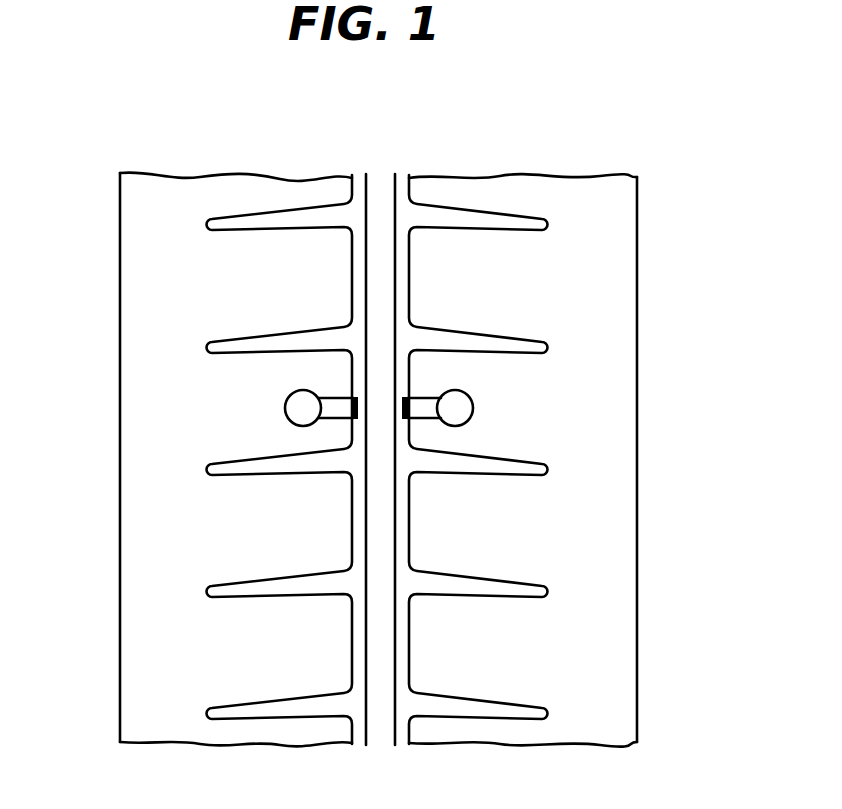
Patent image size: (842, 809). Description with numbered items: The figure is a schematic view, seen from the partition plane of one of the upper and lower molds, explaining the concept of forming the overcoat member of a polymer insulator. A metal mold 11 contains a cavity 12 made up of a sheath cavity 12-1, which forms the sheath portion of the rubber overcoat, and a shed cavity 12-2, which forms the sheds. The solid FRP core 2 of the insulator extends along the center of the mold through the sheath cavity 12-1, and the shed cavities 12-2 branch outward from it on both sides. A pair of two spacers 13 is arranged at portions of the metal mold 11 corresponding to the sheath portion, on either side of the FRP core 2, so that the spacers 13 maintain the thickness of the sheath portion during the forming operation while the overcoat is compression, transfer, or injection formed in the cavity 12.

The FRP core 2 is at (382, 180).
The metal mold 11 is at (617, 229).
The cavity 12 is at (498, 459).
The sheath cavity 12-1 is at (405, 280).
The shed cavity 12-2 is at (530, 344).
The spacer 13 is at (290, 410).